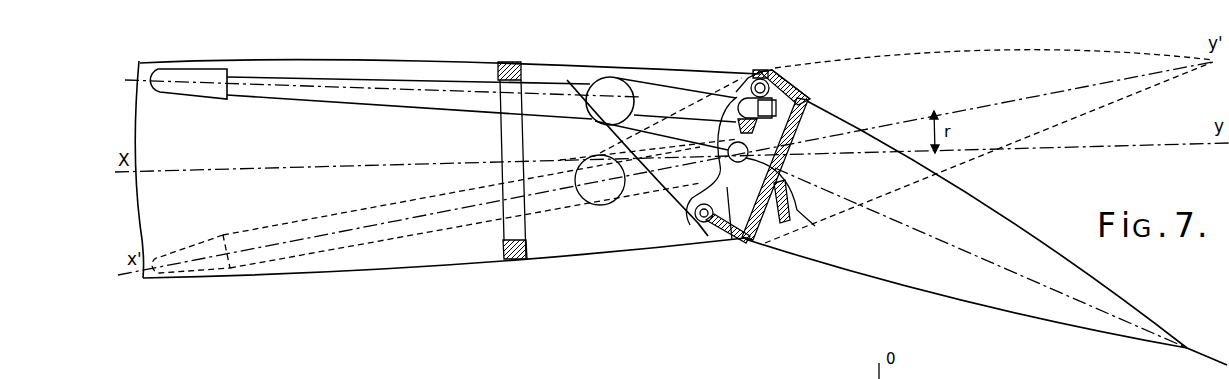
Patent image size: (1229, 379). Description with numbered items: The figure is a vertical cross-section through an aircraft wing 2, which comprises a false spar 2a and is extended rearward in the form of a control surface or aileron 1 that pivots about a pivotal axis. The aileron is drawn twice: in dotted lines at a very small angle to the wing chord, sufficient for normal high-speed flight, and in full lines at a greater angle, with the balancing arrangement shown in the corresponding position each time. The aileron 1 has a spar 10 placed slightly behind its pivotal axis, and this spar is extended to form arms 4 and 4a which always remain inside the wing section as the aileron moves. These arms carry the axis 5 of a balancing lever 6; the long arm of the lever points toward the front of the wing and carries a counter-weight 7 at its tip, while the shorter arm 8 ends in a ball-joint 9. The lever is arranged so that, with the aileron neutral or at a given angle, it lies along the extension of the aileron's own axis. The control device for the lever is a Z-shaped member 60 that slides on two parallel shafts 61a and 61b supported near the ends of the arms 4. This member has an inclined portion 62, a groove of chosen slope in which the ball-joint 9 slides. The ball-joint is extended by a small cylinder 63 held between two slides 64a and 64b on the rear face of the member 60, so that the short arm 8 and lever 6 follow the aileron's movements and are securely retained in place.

The aileron 1 is at (1068, 128).
The wing 2 is at (428, 263).
The false spar 2a is at (525, 259).
The arm 4 is at (490, 378).
The arm 4a is at (637, 140).
The axis of lever 5 is at (612, 80).
The lever 6 is at (376, 98).
The counter-weight 7 is at (202, 88).
The shorter arm 8 is at (641, 190).
The ball-joint 9 is at (737, 90).
The spar 10 is at (805, 97).
The Z-shaped member 60 is at (742, 240).
The parallel shaft 61a is at (770, 70).
The parallel shaft 61b is at (706, 230).
The inclined portion 62 is at (812, 106).
The small cylinder 63 is at (795, 84).
The slide 64a is at (790, 162).
The slide 64b is at (788, 187).